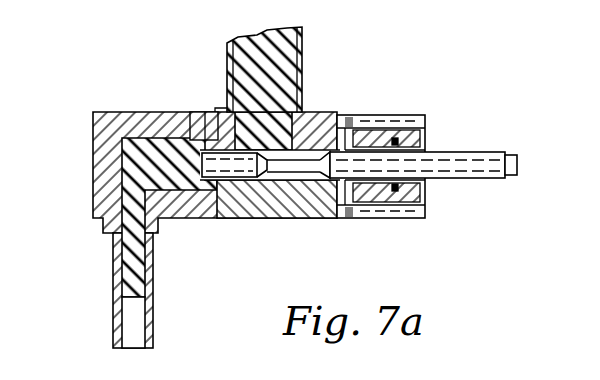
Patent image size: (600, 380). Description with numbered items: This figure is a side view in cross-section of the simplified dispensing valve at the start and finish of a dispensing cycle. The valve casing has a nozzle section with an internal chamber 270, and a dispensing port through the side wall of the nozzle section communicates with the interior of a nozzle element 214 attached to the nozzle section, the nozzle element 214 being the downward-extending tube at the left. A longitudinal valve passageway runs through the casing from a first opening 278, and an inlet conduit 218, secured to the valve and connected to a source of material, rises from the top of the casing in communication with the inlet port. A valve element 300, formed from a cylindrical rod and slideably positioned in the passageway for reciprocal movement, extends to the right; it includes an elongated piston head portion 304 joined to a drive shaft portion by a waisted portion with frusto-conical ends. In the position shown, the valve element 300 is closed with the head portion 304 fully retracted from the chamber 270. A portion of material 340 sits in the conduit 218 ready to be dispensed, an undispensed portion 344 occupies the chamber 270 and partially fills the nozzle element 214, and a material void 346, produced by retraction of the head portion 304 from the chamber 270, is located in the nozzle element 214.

The nozzle element 214 is at (116, 272).
The inlet conduit 218 is at (304, 46).
The internal chamber 270 is at (150, 136).
The first opening 278 is at (190, 138).
The valve element 300 is at (468, 152).
The elongated piston head portion 304 is at (265, 182).
The portion of material 340 is at (277, 92).
The undispensed portion 344 is at (173, 180).
The material void 346 is at (135, 328).